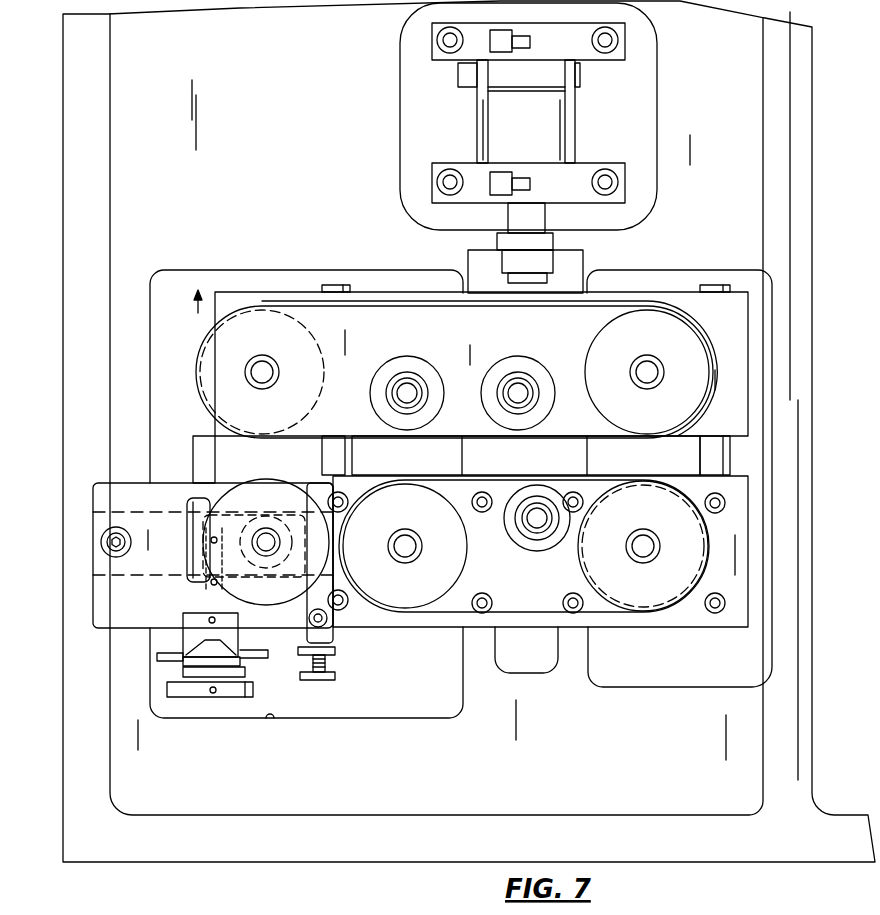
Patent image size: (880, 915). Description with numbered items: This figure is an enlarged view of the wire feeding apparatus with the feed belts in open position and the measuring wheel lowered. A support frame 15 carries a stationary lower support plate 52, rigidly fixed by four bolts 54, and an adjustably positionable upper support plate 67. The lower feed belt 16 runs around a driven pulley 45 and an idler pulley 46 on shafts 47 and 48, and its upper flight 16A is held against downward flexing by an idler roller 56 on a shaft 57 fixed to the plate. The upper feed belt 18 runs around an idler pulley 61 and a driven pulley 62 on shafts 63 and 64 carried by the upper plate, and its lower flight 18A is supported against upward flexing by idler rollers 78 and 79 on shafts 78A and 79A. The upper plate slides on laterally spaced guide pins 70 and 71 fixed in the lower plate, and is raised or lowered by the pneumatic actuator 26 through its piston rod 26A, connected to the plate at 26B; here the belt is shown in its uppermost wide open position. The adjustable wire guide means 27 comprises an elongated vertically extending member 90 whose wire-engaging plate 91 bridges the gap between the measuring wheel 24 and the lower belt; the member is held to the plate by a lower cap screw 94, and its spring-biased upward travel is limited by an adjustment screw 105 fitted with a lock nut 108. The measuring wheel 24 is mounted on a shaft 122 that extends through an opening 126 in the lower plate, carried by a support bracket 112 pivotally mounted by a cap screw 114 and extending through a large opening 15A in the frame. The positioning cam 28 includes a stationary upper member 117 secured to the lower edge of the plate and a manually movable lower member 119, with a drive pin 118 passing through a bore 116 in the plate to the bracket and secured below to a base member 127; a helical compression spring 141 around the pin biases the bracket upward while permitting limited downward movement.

The support frame 15 is at (695, 150).
The opening in frame 15A is at (272, 722).
The lower feed belt 16 is at (612, 627).
The upper flight of lower feed belt 16A is at (625, 480).
The upper feed belt 18 is at (400, 300).
The lower flight of upper feed belt 18A is at (640, 442).
The measuring wheel 24 is at (215, 472).
The pneumatic actuator 26 is at (630, 112).
The piston rod 26A is at (575, 213).
The piston rod connection 26B is at (545, 262).
The adjustable wire guide means 27 is at (352, 646).
The positioning cam 28 is at (170, 672).
The driven pulley 45 is at (643, 546).
The idler pulley 46 is at (405, 546).
The shaft 47 is at (648, 562).
The shaft 48 is at (410, 560).
The lower support plate 52 is at (745, 518).
The bolts 54 is at (492, 495).
The idler roller 56 is at (517, 538).
The shaft 57 is at (538, 525).
The idler pulley 61 is at (602, 330).
The driven pulley 62 is at (262, 372).
The shaft 63 is at (648, 383).
The shaft 64 is at (266, 382).
The upper support plate 67 is at (750, 410).
The guide pin 70 is at (722, 285).
The guide pin 71 is at (337, 285).
The idler roller 78 is at (516, 365).
The shaft 78A is at (520, 393).
The idler roller 79 is at (402, 365).
The shaft 79A is at (405, 395).
The elongated vertically extending member 90 is at (335, 637).
The wire-engaging plate 91 is at (360, 480).
The lower cap screw 94 is at (327, 617).
The adjustment screw 105 is at (335, 678).
The lock nut 108 is at (335, 655).
The support bracket 112 is at (120, 500).
The cap screw 114 is at (100, 530).
The bore 116 is at (222, 596).
The stationary upper member 117 is at (245, 648).
The drive pin 118 is at (240, 618).
The manually movable lower member 119 is at (240, 672).
The shaft 122 is at (266, 530).
The opening 126 is at (192, 498).
The base member 127 is at (200, 705).
The helical compression spring 141 is at (205, 575).